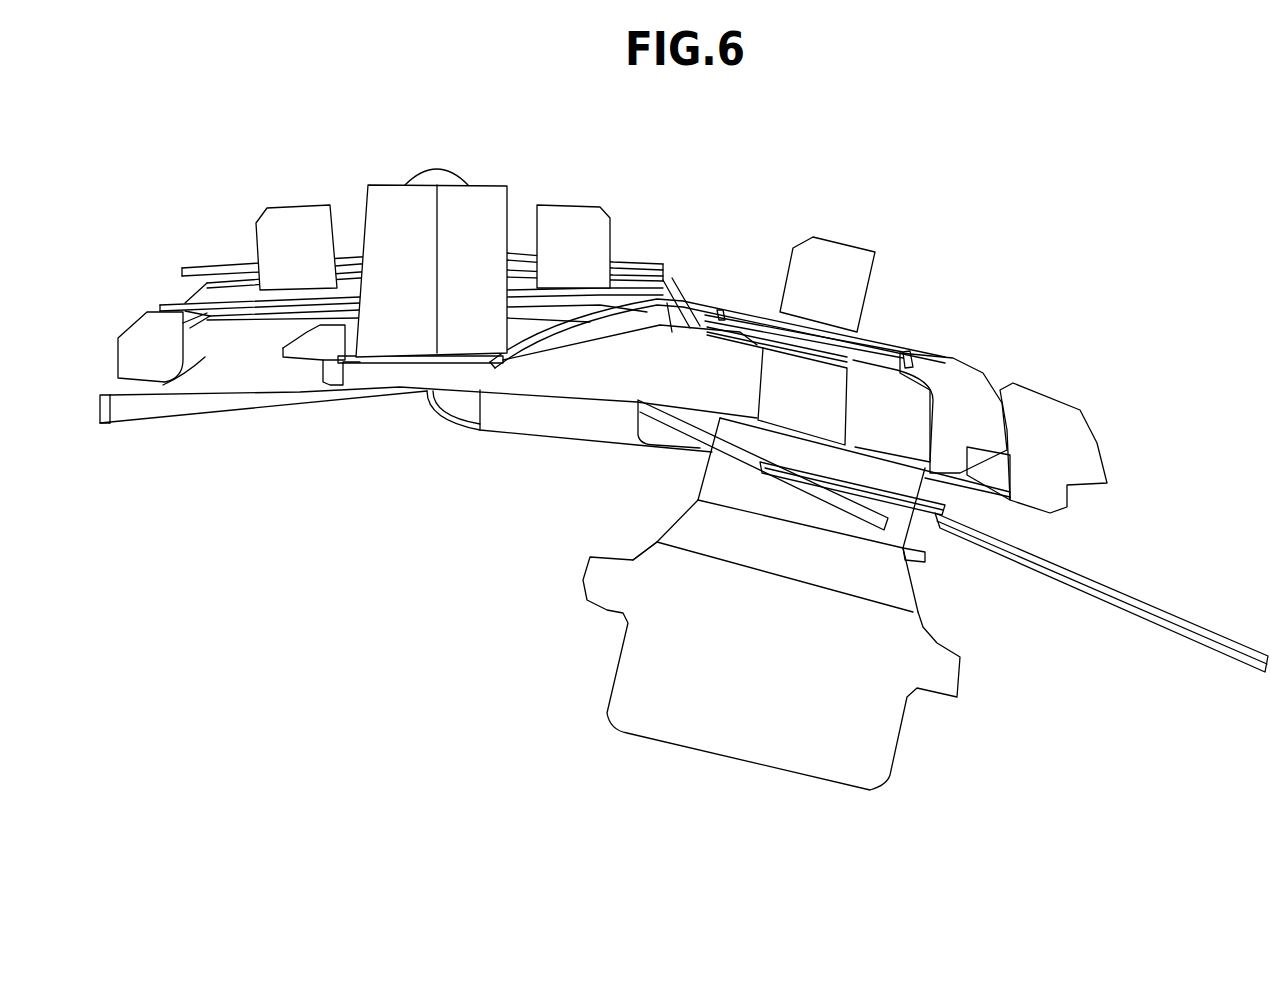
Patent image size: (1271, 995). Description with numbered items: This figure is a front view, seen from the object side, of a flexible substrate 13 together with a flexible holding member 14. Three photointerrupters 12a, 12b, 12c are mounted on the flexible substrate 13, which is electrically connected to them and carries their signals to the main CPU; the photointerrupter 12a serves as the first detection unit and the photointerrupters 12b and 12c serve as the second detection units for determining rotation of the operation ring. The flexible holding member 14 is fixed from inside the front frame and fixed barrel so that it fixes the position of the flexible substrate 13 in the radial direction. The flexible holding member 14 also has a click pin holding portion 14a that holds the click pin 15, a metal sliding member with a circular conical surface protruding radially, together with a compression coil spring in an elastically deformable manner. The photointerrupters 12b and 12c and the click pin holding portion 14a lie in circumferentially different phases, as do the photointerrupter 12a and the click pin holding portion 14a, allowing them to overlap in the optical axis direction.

The click pin 15 is at (438, 167).
The photointerrupter 12c is at (292, 247).
The photointerrupter 12b is at (570, 247).
The photointerrupter 12a is at (830, 280).
The flexible substrate 13 is at (720, 304).
The click pin holding portion 14a is at (410, 295).
The flexible holding member 14 is at (578, 368).